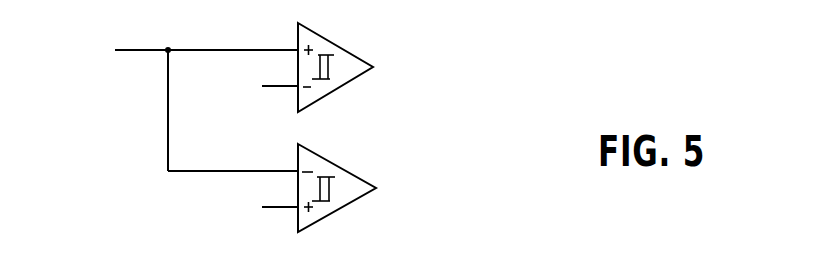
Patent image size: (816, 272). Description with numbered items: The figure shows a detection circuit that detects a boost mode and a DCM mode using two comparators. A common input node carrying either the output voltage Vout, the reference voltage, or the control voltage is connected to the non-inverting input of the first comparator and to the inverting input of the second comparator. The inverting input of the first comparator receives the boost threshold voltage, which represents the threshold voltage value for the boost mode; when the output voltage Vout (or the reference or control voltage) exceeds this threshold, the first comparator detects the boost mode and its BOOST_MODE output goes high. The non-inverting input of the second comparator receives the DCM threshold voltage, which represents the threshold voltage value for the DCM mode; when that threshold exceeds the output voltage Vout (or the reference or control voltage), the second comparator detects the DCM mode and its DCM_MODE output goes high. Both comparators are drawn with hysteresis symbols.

The output voltage Vout is at (170, 89).